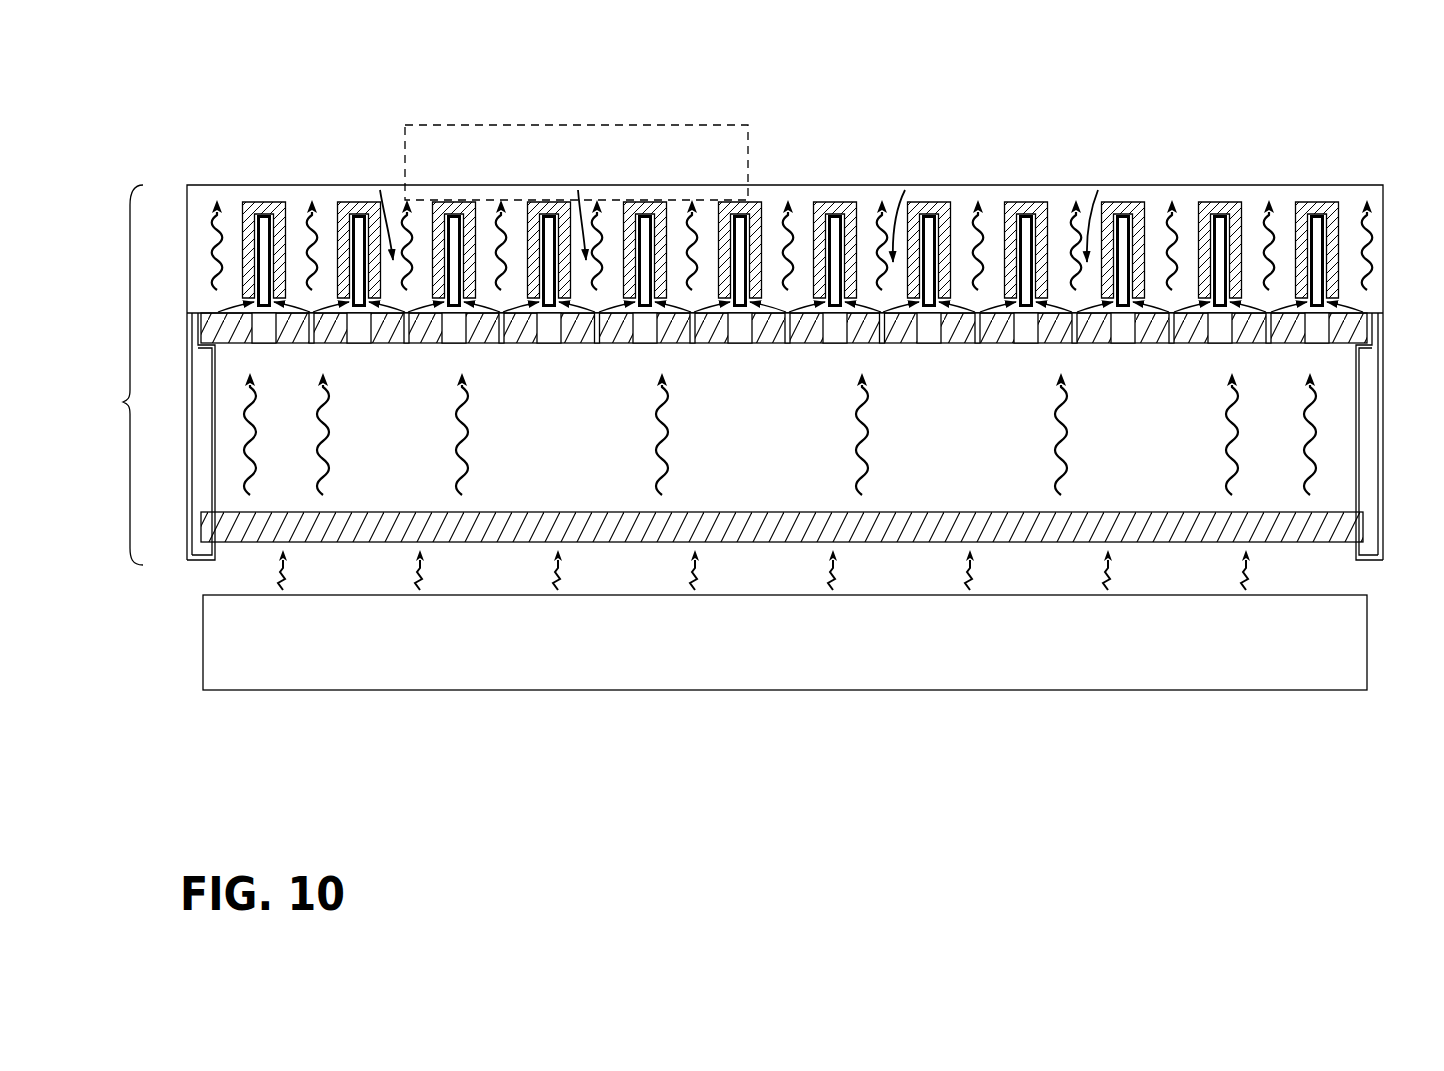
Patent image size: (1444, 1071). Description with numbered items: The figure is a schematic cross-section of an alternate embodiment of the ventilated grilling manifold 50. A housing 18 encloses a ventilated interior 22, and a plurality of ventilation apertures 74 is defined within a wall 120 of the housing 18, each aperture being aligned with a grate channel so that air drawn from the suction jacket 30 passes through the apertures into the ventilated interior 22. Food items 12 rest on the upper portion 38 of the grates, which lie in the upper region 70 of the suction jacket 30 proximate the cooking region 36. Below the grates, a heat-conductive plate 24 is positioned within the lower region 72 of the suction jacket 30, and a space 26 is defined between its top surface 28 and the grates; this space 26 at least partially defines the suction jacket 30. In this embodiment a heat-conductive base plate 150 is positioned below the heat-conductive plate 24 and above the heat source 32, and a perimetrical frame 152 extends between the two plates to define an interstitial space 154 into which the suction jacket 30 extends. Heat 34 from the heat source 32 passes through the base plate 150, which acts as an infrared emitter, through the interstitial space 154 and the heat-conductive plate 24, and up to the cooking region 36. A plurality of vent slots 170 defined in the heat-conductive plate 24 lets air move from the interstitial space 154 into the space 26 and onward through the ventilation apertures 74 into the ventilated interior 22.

The ventilated grilling manifold 50 is at (203, 130).
The food items 12 is at (428, 124).
The ventilation apertures 74 is at (266, 212).
The cooking region 36 is at (756, 182).
The heat 34 is at (796, 214).
The upper portion 38 is at (924, 206).
The ventilated interior 22 is at (1056, 200).
The wall 120 is at (1156, 213).
The housing 18 is at (1300, 185).
The upper region 70 is at (177, 242).
The suction jacket 30 is at (117, 375).
The interstitial space 154 is at (237, 402).
The lower region 72 is at (177, 477).
The vent slots 170 is at (402, 328).
The heat-conductive plate 24 is at (527, 333).
The top surface 28 is at (703, 303).
The space 26 is at (963, 303).
The perimetrical frame 152 is at (1380, 432).
The heat-conductive base plate 150 is at (1365, 522).
The heat source 32 is at (788, 667).